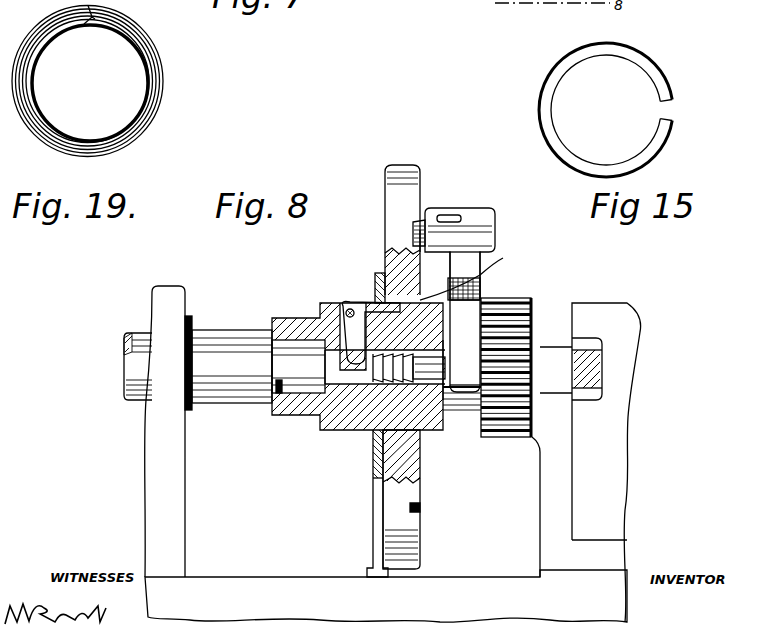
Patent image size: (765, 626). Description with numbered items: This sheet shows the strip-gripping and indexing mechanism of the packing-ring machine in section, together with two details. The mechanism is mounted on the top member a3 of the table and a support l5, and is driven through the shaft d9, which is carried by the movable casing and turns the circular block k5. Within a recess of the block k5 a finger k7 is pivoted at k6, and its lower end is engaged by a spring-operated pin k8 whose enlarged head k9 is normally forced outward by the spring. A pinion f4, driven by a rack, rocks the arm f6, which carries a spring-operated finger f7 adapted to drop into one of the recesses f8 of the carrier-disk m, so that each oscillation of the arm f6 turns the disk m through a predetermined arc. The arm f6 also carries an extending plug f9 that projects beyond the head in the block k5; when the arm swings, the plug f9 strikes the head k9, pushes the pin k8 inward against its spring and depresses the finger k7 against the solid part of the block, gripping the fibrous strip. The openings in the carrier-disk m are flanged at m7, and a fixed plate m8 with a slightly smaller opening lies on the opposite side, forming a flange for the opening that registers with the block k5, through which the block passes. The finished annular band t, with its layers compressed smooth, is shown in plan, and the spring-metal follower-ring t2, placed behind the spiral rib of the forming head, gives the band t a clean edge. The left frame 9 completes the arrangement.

In FIG. 19, the annular band t is at (33, 80).
In FIG. 15, the annular ring t2 is at (553, 108).
In FIG. 8, the left frame plate 9 is at (146, 420).
In FIG. 8, the shaft d9 is at (228, 342).
In FIG. 8, the spring-operated pin k8 is at (330, 395).
In FIG. 8, the finger k7 is at (365, 306).
In FIG. 8, the pivot k6 is at (350, 308).
In FIG. 8, the circular block k5 is at (372, 432).
In FIG. 8, the enlarged head k9 is at (430, 436).
In FIG. 8, the carrier-disk m is at (410, 165).
In FIG. 8, the plate m8 is at (378, 445).
In FIG. 8, the flange m7 is at (479, 266).
In FIG. 8, the arm f6 is at (495, 215).
In FIG. 8, the spring-operated finger f7 is at (445, 215).
In FIG. 8, the recesses f8 is at (413, 228).
In FIG. 8, the extending plug f9 is at (480, 297).
In FIG. 8, the pinion f4 is at (532, 300).
In FIG. 8, the support l5 is at (637, 323).
In FIG. 8, the top member a3 is at (386, 596).